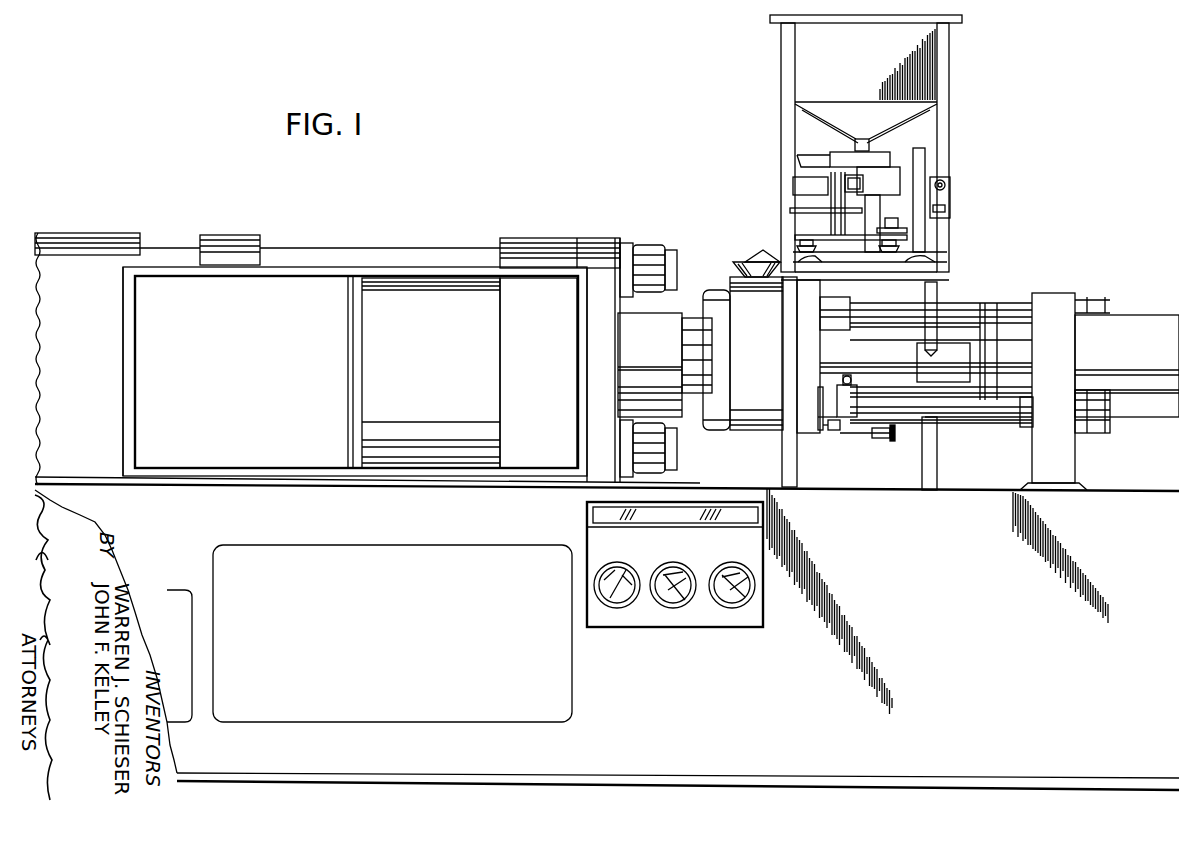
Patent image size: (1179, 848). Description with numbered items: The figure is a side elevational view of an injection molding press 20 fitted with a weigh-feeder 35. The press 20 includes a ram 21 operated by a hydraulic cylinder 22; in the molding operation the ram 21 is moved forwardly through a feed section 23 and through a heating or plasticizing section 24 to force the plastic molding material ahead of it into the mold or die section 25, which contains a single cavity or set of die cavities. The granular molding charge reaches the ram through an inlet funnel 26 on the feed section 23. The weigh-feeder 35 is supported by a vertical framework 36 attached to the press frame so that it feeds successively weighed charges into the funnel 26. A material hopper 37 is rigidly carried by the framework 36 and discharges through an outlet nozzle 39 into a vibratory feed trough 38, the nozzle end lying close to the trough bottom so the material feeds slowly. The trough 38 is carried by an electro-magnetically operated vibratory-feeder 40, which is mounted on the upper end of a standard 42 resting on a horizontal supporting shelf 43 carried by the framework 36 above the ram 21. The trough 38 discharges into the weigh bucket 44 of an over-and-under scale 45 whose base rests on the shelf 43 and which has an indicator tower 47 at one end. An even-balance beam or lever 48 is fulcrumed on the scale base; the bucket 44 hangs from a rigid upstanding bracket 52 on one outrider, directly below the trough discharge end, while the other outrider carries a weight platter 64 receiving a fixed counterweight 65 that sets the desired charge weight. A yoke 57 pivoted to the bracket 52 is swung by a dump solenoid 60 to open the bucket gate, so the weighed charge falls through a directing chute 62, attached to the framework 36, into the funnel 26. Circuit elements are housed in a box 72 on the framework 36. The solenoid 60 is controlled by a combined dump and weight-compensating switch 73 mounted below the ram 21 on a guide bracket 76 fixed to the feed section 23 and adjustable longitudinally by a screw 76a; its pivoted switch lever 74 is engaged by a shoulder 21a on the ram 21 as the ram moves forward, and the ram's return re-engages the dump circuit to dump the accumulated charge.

The press 20 is at (522, 233).
The ram 21 is at (856, 352).
The shoulder 21a is at (933, 417).
The hydraulic cylinder 22 is at (1115, 323).
The feed section 23 is at (742, 305).
The heating or plasticizing section 24 is at (657, 377).
The mold or die section 25 is at (515, 367).
The inlet funnel 26 is at (750, 270).
The weigh-feeder 35 is at (913, 133).
The vertical framework 36 is at (942, 65).
The material hopper 37 is at (830, 113).
The vibratory feed trough 38 is at (807, 156).
The outlet nozzle 39 is at (843, 143).
The vibratory-feeder 40 is at (893, 178).
The standard 42 is at (942, 187).
The horizontal supporting shelf 43 is at (913, 255).
The weigh bucket 44 is at (803, 185).
The scale 45 is at (920, 272).
The indicator tower 47 is at (920, 150).
The even-balance beam or lever 48 is at (830, 240).
The rigid upstanding bracket 52 is at (800, 233).
The yoke 57 is at (810, 207).
The dump solenoid 60 is at (853, 180).
The directing chute 62 is at (767, 250).
The weight platter 64 is at (905, 230).
The fixed counterweight 65 is at (925, 237).
The box 72 is at (950, 200).
The combined dump switch and weight-compensating switch 73 is at (845, 412).
The pivoted switch lever 74 is at (853, 385).
The guide bracket 76 is at (830, 427).
The screw 76a is at (877, 438).